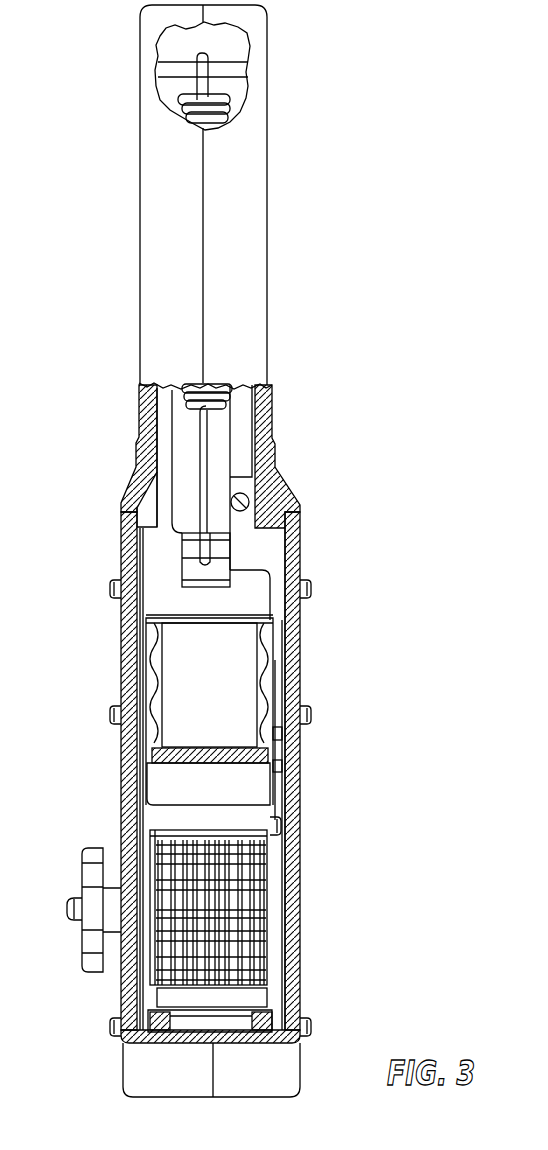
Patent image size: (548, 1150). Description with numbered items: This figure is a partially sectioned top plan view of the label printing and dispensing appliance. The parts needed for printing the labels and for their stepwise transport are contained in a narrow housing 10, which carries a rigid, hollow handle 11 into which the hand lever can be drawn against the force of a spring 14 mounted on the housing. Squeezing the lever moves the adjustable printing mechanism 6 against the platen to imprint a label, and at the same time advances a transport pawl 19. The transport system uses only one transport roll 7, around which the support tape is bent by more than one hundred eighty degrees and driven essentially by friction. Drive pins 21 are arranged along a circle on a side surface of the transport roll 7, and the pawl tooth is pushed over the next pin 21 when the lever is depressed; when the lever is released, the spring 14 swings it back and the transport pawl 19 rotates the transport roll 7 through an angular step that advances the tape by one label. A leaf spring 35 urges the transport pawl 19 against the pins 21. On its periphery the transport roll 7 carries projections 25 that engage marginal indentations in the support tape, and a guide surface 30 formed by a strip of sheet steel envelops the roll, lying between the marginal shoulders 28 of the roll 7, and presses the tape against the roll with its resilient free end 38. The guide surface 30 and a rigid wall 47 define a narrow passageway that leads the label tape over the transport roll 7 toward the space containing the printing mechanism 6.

The handle 11 is at (262, 206).
The spring 14 is at (186, 385).
The leaf spring 35 is at (287, 553).
The free end of the guide surface 38 is at (187, 620).
The marginal shoulders 28 is at (147, 630).
The projections 25 is at (160, 665).
The guide surface 30 is at (178, 690).
The transport pawl 19 is at (284, 683).
The transport roll 7 is at (278, 728).
The drive pins 21 is at (286, 768).
The rigid wall 47 is at (266, 795).
The housing 10 is at (131, 777).
The printing mechanism 6 is at (257, 908).